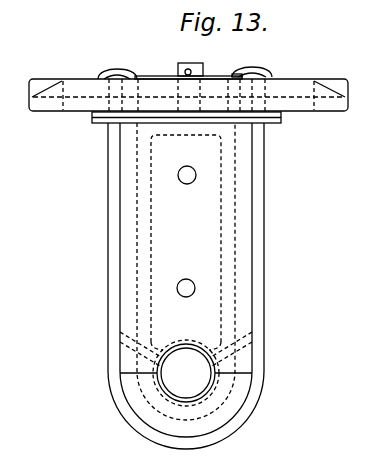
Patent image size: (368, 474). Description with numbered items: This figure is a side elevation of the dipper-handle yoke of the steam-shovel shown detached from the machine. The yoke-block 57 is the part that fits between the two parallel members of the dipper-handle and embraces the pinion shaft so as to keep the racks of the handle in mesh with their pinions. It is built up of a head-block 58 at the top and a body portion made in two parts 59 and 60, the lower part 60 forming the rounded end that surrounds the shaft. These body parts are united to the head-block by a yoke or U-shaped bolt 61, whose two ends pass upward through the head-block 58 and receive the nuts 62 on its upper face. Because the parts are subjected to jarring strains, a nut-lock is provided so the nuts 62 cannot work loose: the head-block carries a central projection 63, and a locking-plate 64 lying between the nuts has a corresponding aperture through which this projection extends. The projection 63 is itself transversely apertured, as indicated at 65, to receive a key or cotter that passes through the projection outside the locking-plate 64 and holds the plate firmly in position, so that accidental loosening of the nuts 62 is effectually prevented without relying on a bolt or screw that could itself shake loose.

The yoke-block 57 is at (199, 135).
The head-block 58 is at (341, 75).
The body portion part 59 is at (247, 248).
The body portion part 60 is at (232, 412).
The yoke or U-shaped bolt 61 is at (272, 289).
The nuts 62 is at (105, 78).
The central projection 63 is at (201, 76).
The locking-plate 64 is at (153, 76).
The transverse aperture 65 is at (188, 69).